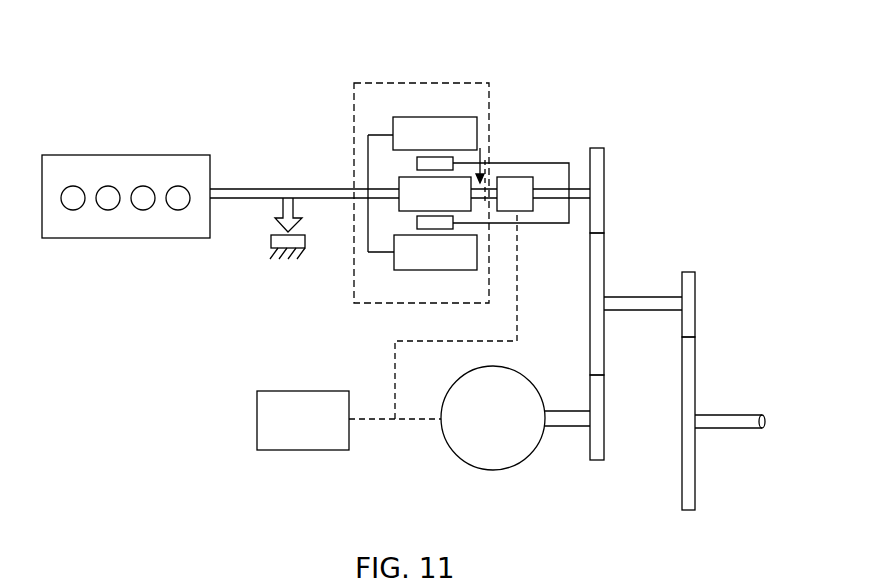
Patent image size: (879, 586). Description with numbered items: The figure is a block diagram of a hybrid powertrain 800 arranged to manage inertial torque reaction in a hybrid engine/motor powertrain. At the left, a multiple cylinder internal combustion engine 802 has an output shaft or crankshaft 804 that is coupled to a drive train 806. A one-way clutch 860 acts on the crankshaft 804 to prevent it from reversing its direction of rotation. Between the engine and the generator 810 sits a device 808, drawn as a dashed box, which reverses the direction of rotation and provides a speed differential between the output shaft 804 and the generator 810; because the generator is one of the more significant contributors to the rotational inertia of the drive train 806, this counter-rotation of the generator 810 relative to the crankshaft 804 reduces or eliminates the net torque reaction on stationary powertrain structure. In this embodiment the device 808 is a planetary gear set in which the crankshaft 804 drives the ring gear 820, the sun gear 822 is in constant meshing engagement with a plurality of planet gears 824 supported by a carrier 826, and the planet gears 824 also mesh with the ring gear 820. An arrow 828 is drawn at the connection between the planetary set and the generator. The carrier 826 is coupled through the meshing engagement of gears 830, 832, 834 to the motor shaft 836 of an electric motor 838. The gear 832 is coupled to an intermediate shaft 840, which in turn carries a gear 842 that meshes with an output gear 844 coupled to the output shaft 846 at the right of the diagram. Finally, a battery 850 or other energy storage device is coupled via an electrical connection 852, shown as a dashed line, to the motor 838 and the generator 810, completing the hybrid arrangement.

The hybrid powertrain 800 is at (532, 60).
The multiple cylinder internal combustion engine 802 is at (125, 155).
The output shaft 804 is at (270, 189).
The drive train 806 is at (632, 114).
The device 808 is at (433, 82).
The generator 810 is at (515, 177).
The ring gear 820 is at (448, 143).
The sun gear 822 is at (448, 203).
The planet gears 824 is at (417, 223).
The carrier 826 is at (542, 223).
The control input 828 is at (481, 156).
The gear 830 is at (604, 164).
The gear 832 is at (604, 265).
The gear 834 is at (592, 446).
The motor shaft 836 is at (573, 411).
The electric motor 838 is at (493, 470).
The intermediate shaft 840 is at (672, 297).
The gear 842 is at (697, 323).
The output gear 844 is at (697, 496).
The output shaft 846 is at (737, 414).
The battery 850 is at (303, 450).
The electrical connection 852 is at (390, 422).
The one-way clutch 860 is at (271, 213).